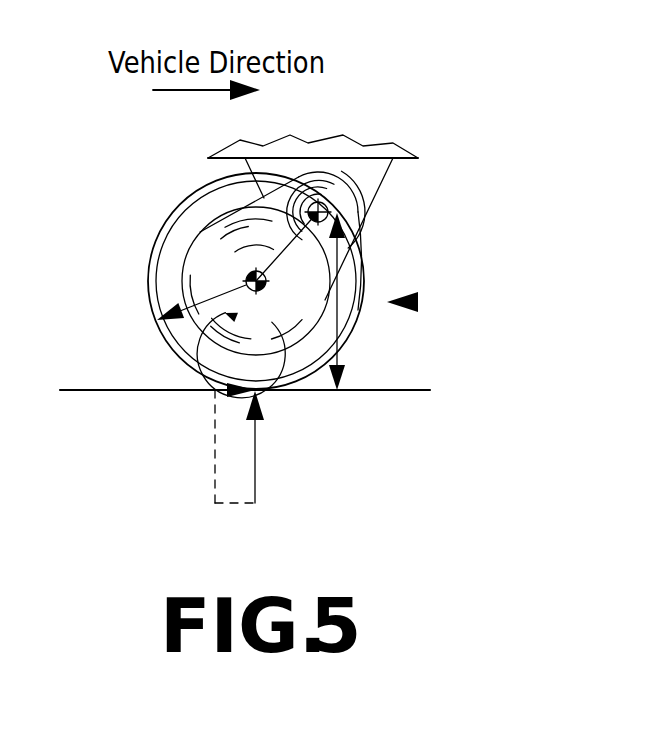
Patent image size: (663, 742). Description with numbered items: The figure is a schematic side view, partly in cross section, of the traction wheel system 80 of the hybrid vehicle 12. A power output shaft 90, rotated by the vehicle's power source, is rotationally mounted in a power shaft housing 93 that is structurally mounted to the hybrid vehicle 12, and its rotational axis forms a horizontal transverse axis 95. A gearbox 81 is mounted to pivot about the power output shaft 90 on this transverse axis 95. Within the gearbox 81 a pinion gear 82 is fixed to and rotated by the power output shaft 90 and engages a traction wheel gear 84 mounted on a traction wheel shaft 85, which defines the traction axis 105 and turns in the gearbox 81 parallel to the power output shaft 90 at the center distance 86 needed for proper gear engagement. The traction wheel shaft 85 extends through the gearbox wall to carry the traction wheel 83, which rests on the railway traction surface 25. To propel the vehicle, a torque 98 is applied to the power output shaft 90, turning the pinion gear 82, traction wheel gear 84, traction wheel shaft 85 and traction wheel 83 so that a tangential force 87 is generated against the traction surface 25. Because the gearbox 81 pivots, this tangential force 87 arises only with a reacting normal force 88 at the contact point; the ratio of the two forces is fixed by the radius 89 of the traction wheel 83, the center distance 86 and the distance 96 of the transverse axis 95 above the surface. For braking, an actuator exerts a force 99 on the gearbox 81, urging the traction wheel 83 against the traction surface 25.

The hybrid vehicle 12 is at (393, 143).
The railway traction surface 25 is at (413, 390).
The traction wheel system 80 is at (418, 302).
The gearbox 81 is at (352, 258).
The pinion gear 82 is at (348, 222).
The traction wheel 83 is at (348, 337).
The traction wheel gear 84 is at (320, 298).
The traction wheel shaft 85 is at (225, 313).
The center distance 86 is at (207, 232).
The tangential force 87 is at (222, 393).
The normal force 88 is at (258, 445).
The radius 89 is at (195, 297).
The power output shaft 90 is at (345, 205).
The power shaft housing 93 is at (393, 160).
The transverse axis 95 is at (338, 205).
The distance 96 is at (338, 362).
The torque 98 is at (316, 192).
The force 99 is at (212, 196).
The traction axis 105 is at (215, 262).